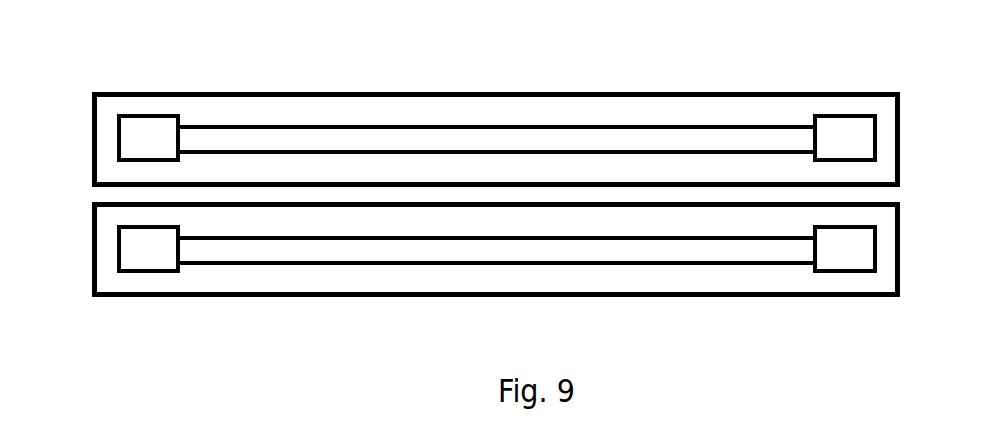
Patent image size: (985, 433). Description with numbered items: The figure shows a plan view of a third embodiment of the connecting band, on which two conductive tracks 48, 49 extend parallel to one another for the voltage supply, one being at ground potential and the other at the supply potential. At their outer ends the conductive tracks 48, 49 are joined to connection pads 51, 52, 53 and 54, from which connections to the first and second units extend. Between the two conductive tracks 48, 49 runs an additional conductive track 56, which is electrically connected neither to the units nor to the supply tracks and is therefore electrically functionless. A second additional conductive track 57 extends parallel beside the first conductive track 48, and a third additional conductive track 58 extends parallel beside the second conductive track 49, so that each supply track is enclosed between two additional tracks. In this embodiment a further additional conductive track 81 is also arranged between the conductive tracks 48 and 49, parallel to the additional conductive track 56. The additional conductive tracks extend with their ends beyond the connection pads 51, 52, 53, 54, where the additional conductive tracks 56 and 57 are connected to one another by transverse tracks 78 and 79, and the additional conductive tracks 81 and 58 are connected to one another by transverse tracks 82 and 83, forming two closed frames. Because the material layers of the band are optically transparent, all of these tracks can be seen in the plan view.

The first conductive track 48 is at (368, 143).
The second conductive track 49 is at (487, 245).
The connection pad 51 is at (137, 145).
The connection pad 52 is at (137, 248).
The connection pad 53 is at (853, 147).
The connection pad 54 is at (853, 243).
The additional conductive track 56 is at (520, 182).
The second additional conductive track 57 is at (302, 92).
The third additional conductive track 58 is at (302, 297).
The transverse track 78 is at (92, 117).
The transverse track 79 is at (902, 115).
The further additional conductive track 81 is at (602, 205).
The transverse track 82 is at (900, 275).
The transverse track 83 is at (92, 270).